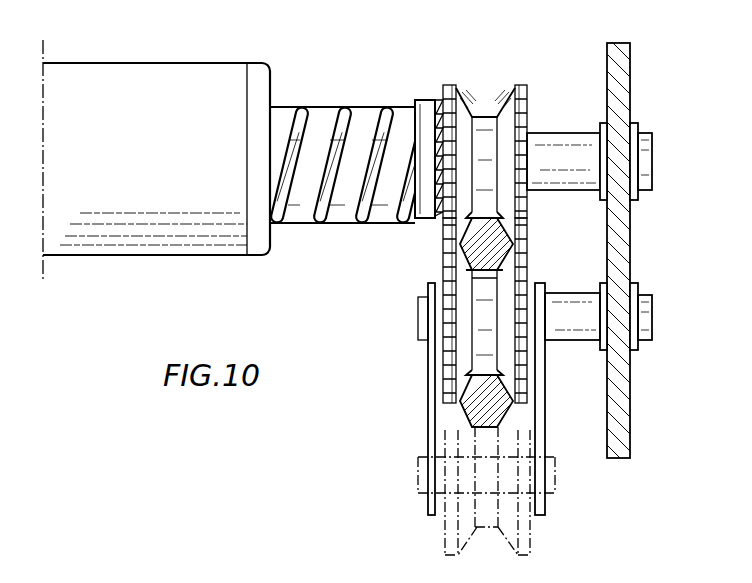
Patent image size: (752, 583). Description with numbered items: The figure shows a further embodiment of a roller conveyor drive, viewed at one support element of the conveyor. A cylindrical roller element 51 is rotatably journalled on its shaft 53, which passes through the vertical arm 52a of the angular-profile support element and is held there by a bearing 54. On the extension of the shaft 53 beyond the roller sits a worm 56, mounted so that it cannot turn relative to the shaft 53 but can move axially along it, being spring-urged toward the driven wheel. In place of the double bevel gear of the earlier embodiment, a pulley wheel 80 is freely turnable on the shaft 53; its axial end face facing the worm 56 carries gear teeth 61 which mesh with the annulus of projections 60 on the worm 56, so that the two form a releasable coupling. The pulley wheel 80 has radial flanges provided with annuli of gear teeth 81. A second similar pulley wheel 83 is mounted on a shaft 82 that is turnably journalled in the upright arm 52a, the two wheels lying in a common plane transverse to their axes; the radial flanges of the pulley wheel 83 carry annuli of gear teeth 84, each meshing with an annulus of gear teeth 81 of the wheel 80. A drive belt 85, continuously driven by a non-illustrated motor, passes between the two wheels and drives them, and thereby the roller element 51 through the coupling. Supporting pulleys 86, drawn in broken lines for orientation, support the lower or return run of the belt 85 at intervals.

The cylindrical roller element 51 is at (217, 84).
The worm 56 is at (360, 112).
The projections 60 is at (424, 100).
The gear teeth 61 is at (441, 92).
The annuli of gear teeth 81 is at (449, 85).
The pulley wheel 80 is at (507, 98).
The drive belt 85 is at (492, 240).
The annuli of gear teeth 84 is at (525, 277).
The second pulley wheel 83 is at (465, 343).
The shaft 53 is at (560, 148).
The vertical arm 52a is at (617, 57).
The bearing 54 is at (648, 160).
The shaft 82 is at (645, 315).
The supporting pulleys 86 is at (510, 517).